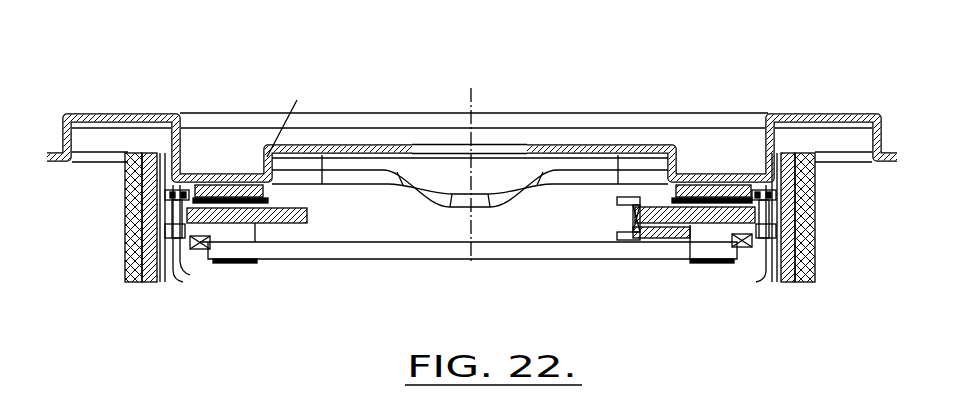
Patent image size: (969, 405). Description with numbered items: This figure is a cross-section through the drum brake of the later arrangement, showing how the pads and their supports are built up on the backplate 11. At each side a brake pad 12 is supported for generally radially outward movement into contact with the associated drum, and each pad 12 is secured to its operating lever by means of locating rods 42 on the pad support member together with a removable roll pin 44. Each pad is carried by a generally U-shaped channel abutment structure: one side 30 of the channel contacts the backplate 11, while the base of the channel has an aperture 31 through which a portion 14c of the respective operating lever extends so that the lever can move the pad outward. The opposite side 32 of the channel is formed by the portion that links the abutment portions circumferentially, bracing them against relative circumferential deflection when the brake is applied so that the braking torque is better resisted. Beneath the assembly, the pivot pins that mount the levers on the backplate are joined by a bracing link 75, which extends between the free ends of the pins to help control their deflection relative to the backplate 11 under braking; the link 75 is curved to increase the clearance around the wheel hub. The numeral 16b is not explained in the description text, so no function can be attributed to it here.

The backplate 11 is at (367, 150).
The brake pad 12 is at (140, 212).
The portion of operating lever 14c is at (204, 252).
The pad 16b is at (240, 263).
The side of U-shaped channel structure 30 is at (237, 190).
The aperture 31 is at (185, 262).
The opposite side of U-shaped channel structure 32 is at (200, 250).
The locating rod 42 is at (188, 203).
The removable roll pin 44 is at (183, 200).
The bracing link 75 is at (530, 254).